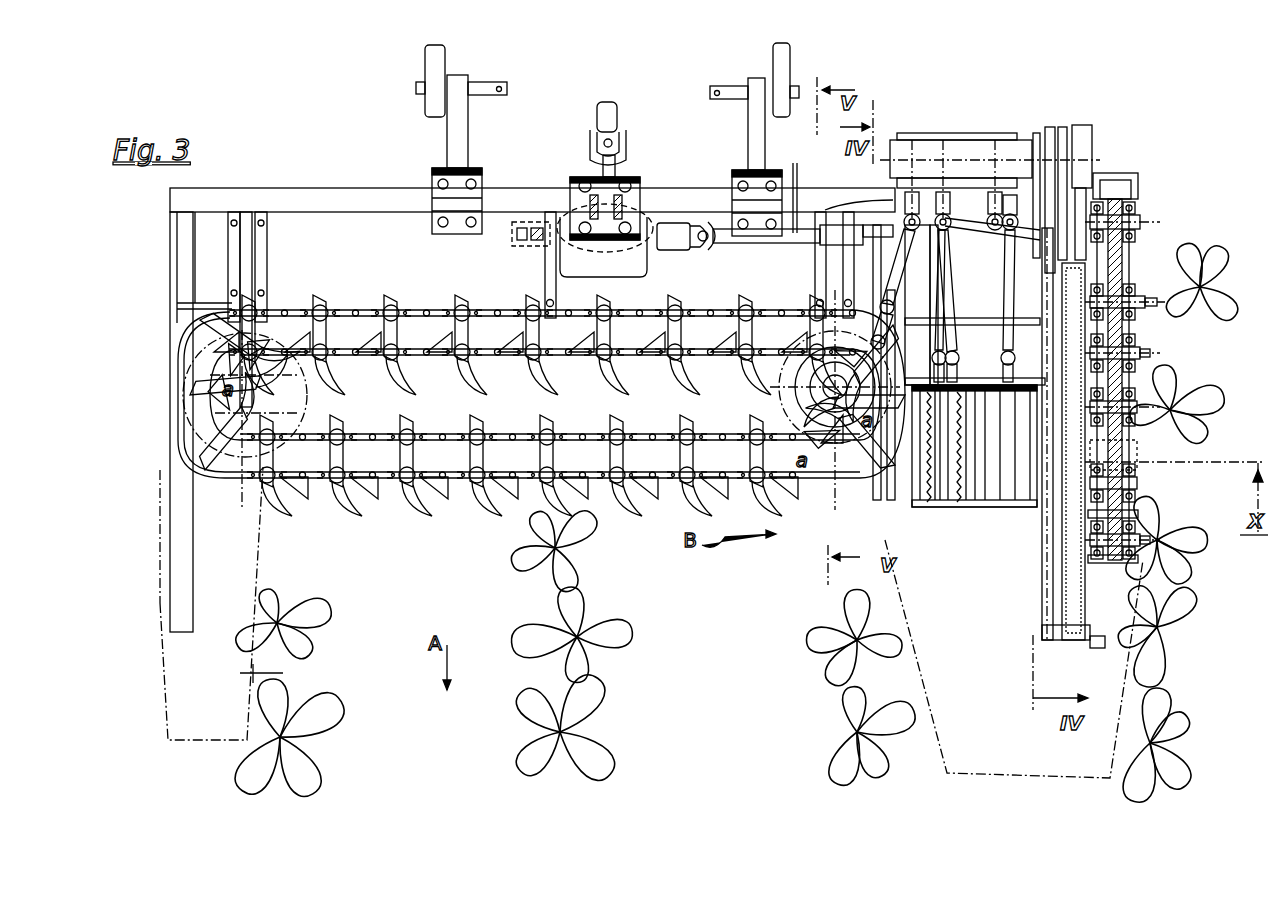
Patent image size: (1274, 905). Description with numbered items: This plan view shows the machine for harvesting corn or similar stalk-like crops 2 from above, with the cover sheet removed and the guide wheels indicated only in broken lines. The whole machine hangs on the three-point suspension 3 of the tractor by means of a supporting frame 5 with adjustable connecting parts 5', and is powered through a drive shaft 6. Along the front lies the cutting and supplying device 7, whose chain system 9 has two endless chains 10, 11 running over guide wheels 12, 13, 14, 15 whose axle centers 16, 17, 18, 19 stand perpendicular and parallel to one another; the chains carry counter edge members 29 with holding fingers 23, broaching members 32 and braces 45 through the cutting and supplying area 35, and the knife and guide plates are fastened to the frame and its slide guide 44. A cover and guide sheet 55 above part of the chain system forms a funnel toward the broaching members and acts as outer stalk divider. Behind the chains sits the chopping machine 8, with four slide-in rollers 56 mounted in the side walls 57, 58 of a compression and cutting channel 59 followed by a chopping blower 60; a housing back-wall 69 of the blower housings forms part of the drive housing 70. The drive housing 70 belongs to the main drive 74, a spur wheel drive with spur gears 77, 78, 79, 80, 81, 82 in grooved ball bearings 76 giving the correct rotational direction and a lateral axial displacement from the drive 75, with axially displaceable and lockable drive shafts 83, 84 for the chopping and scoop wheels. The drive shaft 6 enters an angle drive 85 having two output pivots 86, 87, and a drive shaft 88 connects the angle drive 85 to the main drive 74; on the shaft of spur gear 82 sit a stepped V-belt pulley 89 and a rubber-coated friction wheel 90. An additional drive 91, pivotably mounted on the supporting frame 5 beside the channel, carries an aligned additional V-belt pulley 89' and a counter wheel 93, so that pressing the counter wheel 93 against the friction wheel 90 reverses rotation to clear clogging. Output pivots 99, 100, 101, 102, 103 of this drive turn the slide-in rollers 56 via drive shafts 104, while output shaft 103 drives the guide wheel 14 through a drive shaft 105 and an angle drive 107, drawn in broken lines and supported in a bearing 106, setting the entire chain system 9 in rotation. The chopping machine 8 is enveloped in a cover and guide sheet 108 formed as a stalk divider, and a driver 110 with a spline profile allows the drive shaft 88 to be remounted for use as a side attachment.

The crop 2 is at (1152, 718).
The three-point suspension 3 is at (781, 72).
The supporting frame 5 is at (532, 144).
The adjustable connecting parts 5' is at (607, 155).
The drive shaft 6 is at (616, 114).
The cutting and supplying device 7 is at (362, 238).
The chopping machine 8 is at (1057, 82).
The chain system 9 is at (430, 362).
The endless chain 10 is at (446, 440).
The endless chain 11 is at (368, 442).
The guide wheel 12 is at (812, 470).
The guide wheel 13 is at (238, 458).
The guide wheel 14 is at (762, 306).
The guide wheel 15 is at (270, 322).
The axle center 16 is at (805, 410).
The axle center 17 is at (288, 406).
The axle center 18 is at (796, 393).
The axle center 19 is at (318, 372).
The holding finger 23 is at (332, 462).
The counter edge member 29 is at (352, 458).
The broaching member 32 is at (605, 320).
The cutting and supplying area 35 is at (386, 614).
The slide guide 44 is at (522, 298).
The brace 45 is at (575, 475).
The cover and guide sheet 55 is at (278, 676).
The slide-in rollers 56 is at (945, 507).
The side wall 57 is at (1025, 507).
The side wall 58 is at (972, 306).
The compression and cutting channel 59 is at (832, 535).
The chopping blower 60 is at (1066, 434).
The casing bottom 69 is at (1094, 630).
The drive housing 70 is at (1150, 280).
The main drive 74 is at (1140, 449).
The drive 75 is at (1102, 166).
The grooved ball bearings 76 is at (1137, 207).
The spur gear 77 is at (1145, 560).
The spur gear 78 is at (1122, 514).
The spur gear 79 is at (1140, 414).
The spur gear 80 is at (1140, 370).
The spur gear 81 is at (1120, 326).
The spur gear 82 is at (1138, 246).
The drive shaft 83 is at (1150, 540).
The drive shaft 84 is at (1150, 354).
The angle drive 85 is at (572, 238).
The output pivot 86 is at (668, 242).
The output pivot 87 is at (515, 237).
The drive shaft 88 is at (794, 184).
The V-belt pulley 89 is at (992, 246).
The additional V-belt pulley 89' is at (1002, 154).
The friction wheel 90 is at (1110, 185).
The additional drive 91 is at (942, 148).
The counter wheel 93 is at (1085, 140).
The output pivot 99 is at (1000, 180).
The output pivot 100 is at (1000, 186).
The output pivot 101 is at (916, 190).
The output pivot 102 is at (943, 211).
The output shaft 103 is at (893, 192).
The drive shafts 104 is at (953, 294).
The drive shaft 105 is at (897, 270).
The bearing 106 is at (969, 305).
The angle drive 107 is at (762, 398).
The cover and guide sheet 108 is at (1116, 690).
The driver 110 is at (1183, 300).